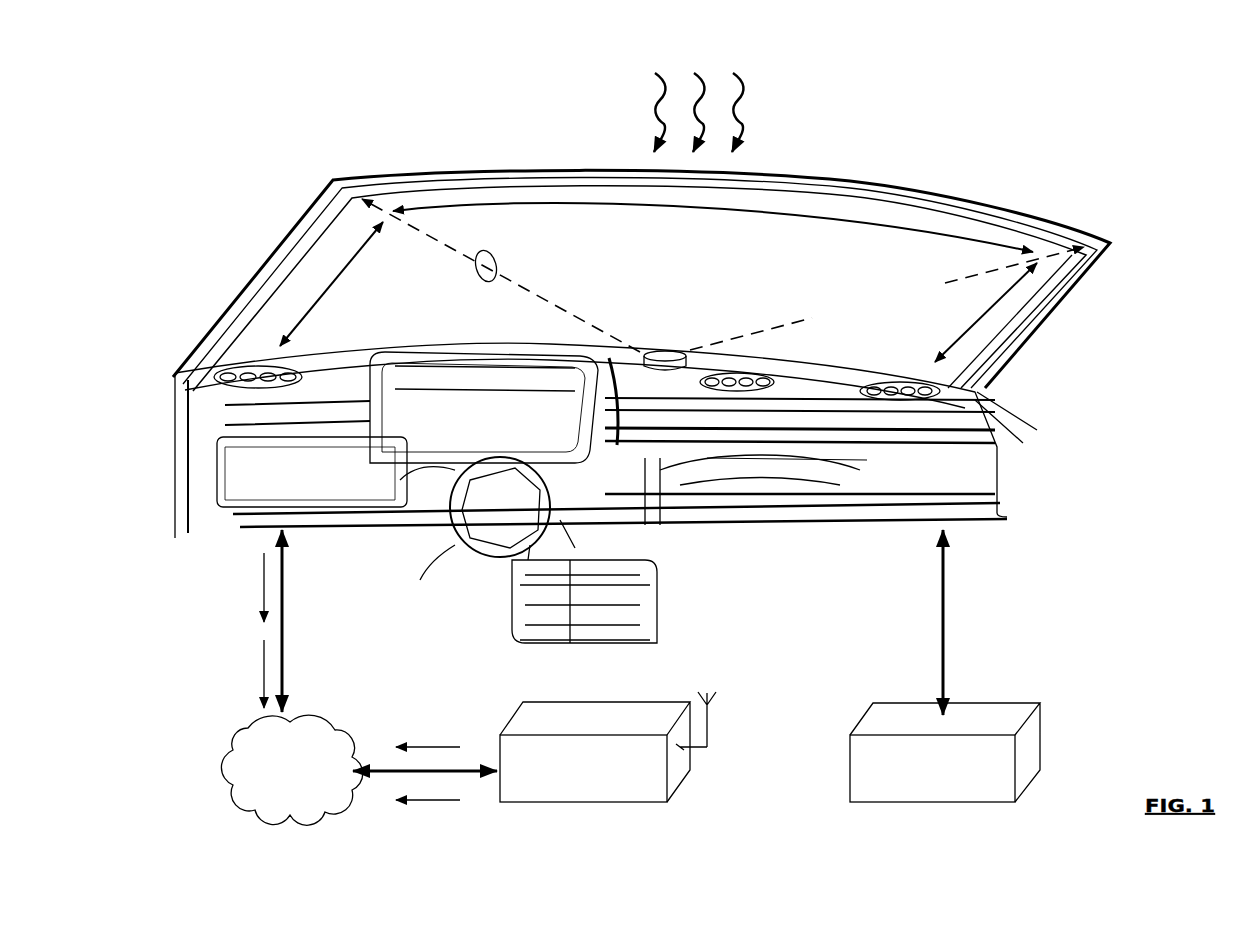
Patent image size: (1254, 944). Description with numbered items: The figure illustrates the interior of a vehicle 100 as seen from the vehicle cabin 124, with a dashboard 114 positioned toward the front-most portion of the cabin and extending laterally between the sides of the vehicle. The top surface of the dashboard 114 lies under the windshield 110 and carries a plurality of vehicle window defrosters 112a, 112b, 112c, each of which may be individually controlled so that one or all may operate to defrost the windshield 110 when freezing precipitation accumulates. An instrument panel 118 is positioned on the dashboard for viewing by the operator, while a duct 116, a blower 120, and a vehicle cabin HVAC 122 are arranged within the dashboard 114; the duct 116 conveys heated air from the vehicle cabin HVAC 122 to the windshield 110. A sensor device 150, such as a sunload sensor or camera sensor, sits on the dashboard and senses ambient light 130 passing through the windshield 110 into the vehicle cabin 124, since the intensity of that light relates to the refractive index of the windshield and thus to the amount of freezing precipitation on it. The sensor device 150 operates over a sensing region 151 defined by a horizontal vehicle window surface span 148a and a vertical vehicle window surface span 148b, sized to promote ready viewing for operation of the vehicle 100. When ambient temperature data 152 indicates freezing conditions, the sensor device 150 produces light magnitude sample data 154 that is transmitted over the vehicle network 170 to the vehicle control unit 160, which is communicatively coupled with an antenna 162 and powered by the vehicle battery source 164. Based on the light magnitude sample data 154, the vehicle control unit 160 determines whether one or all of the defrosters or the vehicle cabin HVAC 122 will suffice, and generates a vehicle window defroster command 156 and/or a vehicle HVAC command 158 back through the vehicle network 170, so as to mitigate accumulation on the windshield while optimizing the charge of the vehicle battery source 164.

The vehicle 100 is at (1104, 163).
The windshield 110 is at (847, 205).
The vehicle window defroster 112a is at (222, 385).
The vehicle window defroster 112b is at (716, 372).
The vehicle window defroster 112c is at (883, 384).
The dashboard 114 is at (990, 401).
The duct 116 is at (800, 440).
The instrument panel 118 is at (397, 450).
The blower 120 is at (643, 560).
The vehicle cabin HVAC 122 is at (650, 612).
The vehicle cabin 124 is at (1028, 622).
The ambient light 130 is at (688, 95).
The horizontal vehicle window surface span 148a is at (450, 202).
The vertical vehicle window surface span 148b is at (1040, 312).
The sensor device 150 is at (650, 350).
The sensing region 151 is at (476, 271).
The ambient temperature data 152 is at (264, 583).
The light magnitude sample data 154 is at (264, 676).
The vehicle window defroster command 156 is at (433, 746).
The vehicle HVAC command 158 is at (440, 802).
The vehicle control unit 160 is at (595, 752).
The antenna 162 is at (714, 740).
The vehicle battery source 164 is at (945, 752).
The vehicle network 170 is at (359, 770).